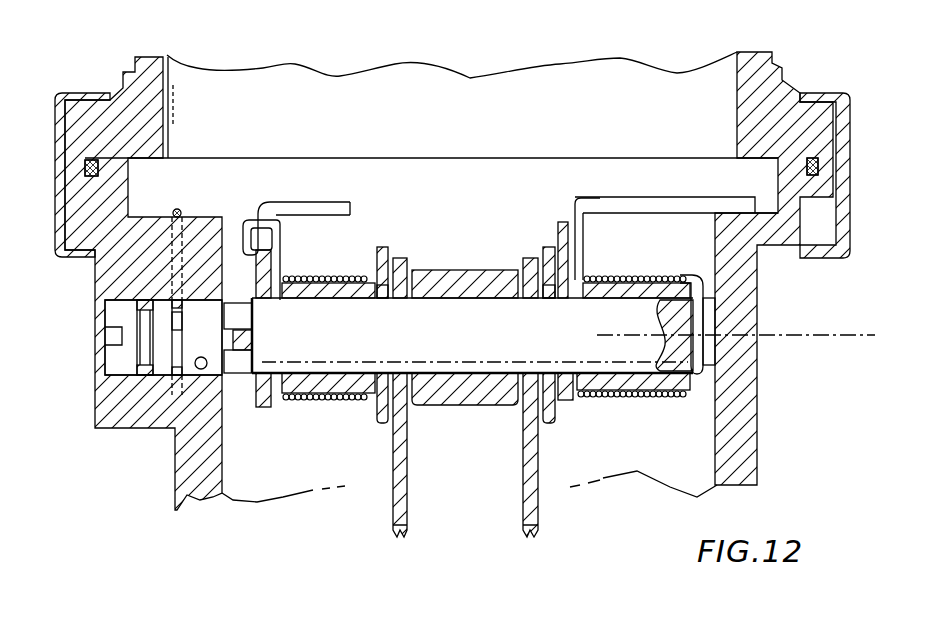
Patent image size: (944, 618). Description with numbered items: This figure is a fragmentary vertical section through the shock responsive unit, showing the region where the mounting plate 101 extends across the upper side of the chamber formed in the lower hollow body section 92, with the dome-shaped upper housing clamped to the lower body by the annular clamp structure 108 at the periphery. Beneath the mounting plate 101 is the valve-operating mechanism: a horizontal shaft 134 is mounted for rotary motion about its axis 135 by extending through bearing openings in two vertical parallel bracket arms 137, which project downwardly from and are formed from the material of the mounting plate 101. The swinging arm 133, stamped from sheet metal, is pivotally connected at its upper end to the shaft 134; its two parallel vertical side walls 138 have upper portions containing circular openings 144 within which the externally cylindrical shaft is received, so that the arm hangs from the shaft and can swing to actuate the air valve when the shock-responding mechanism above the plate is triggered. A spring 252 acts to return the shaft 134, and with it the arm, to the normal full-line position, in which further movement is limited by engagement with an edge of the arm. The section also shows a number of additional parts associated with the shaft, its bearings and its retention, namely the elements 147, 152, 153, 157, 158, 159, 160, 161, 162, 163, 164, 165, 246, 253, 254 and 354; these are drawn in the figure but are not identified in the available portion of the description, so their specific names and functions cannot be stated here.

The lower hollow body section 92 is at (180, 497).
The mounting plate 101 is at (633, 205).
The annular clamp structure 108 is at (846, 93).
The swinging arm 133 is at (390, 473).
The horizontal shaft 134 is at (332, 355).
The axis 135 is at (807, 333).
The bracket arms 137 is at (258, 262).
The side walls 138 is at (392, 527).
The circular openings 144 is at (530, 298).
The bearing 147 is at (383, 298).
The spring 152 is at (296, 395).
The bracket 153 is at (238, 220).
The housing wall 157 is at (97, 404).
The housing body 158 is at (143, 283).
The screw 159 is at (137, 295).
The screw head 160 is at (112, 337).
The shaft body 161 is at (252, 343).
The shaft shoulder 162 is at (252, 330).
The pin 163 is at (178, 210).
The pin groove 164 is at (178, 317).
The hub 165 is at (420, 280).
The retaining ring 246 is at (378, 247).
The spring 252 is at (613, 400).
The bracket 253 is at (563, 233).
The clip 254 is at (707, 350).
The spacer block 354 is at (712, 358).